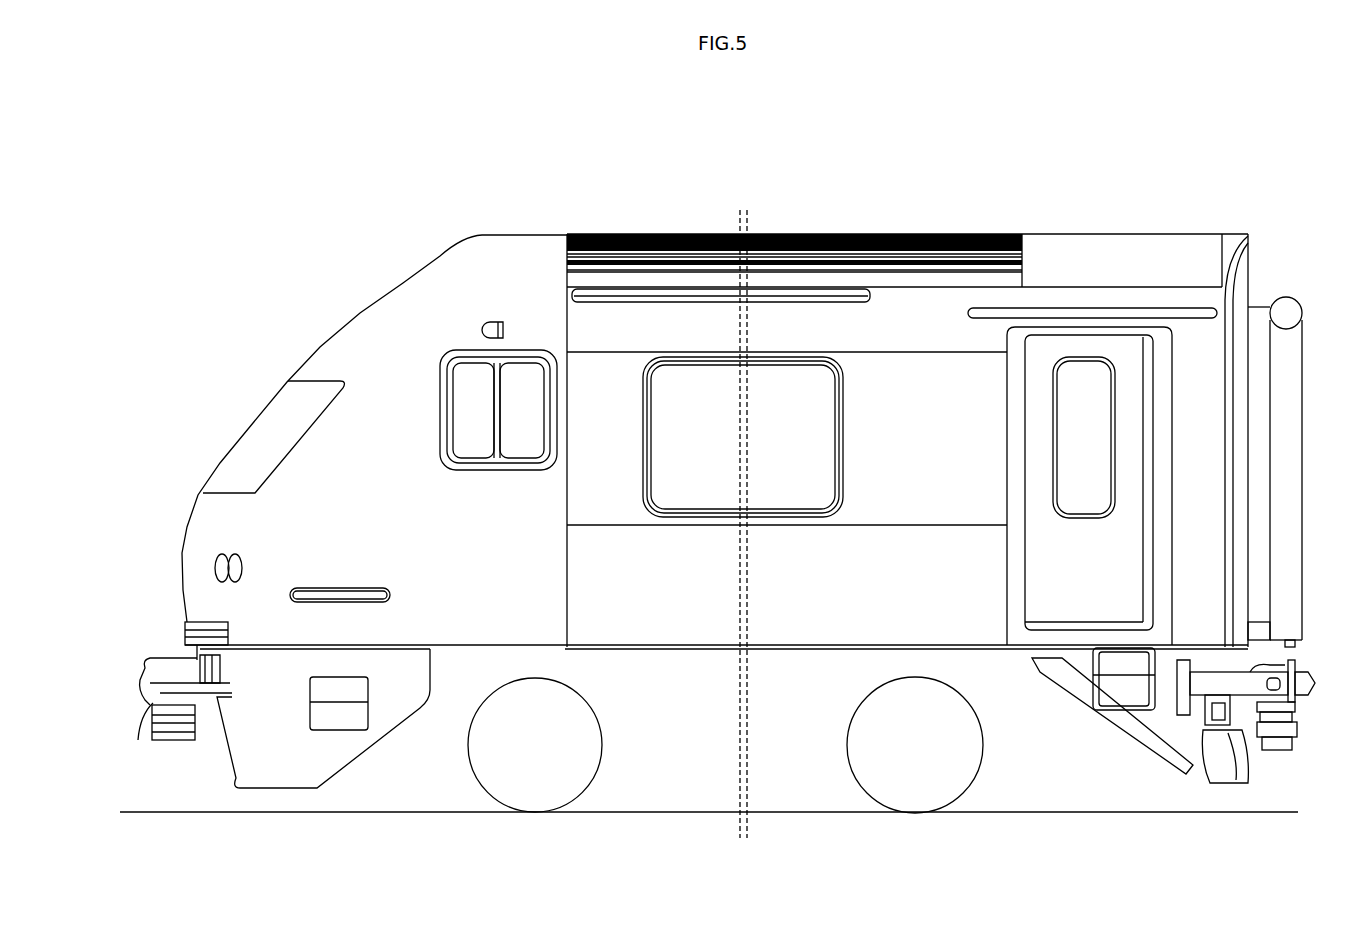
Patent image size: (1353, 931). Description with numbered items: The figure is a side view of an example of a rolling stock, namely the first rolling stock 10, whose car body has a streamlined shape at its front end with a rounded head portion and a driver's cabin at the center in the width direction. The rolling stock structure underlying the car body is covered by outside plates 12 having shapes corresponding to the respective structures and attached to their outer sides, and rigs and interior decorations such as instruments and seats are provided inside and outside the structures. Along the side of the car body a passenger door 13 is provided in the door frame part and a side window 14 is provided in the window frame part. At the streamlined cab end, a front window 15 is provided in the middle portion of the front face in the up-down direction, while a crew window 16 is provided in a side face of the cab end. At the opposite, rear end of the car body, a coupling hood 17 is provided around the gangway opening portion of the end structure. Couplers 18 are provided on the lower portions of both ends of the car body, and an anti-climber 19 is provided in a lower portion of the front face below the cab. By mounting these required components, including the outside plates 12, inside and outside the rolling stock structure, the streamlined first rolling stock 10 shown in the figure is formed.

The first rolling stock 10 is at (735, 155).
The outside plates 12 is at (523, 242).
The passenger door 13 is at (1037, 577).
The side window 14 is at (828, 442).
The front window 15 is at (249, 438).
The crew window 16 is at (481, 456).
The coupling hood 17 is at (1288, 301).
The couplers 18 is at (172, 747).
The anti-climber 19 is at (185, 625).